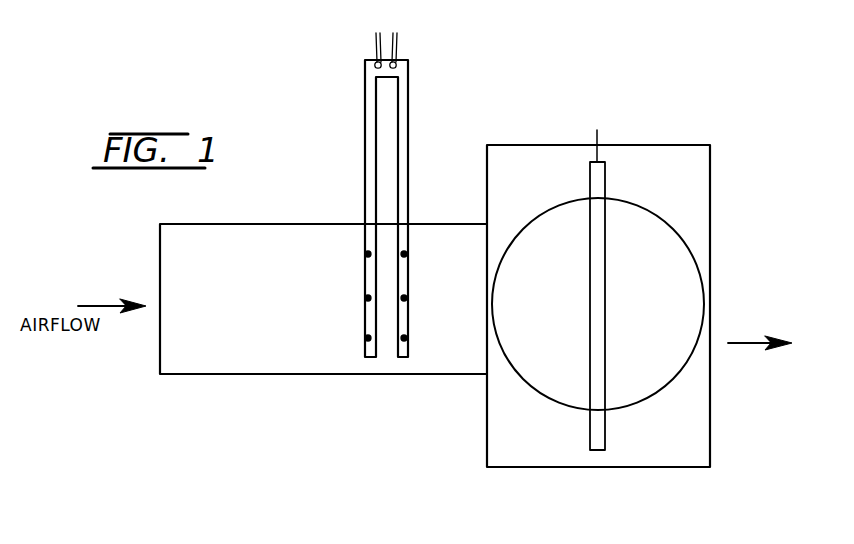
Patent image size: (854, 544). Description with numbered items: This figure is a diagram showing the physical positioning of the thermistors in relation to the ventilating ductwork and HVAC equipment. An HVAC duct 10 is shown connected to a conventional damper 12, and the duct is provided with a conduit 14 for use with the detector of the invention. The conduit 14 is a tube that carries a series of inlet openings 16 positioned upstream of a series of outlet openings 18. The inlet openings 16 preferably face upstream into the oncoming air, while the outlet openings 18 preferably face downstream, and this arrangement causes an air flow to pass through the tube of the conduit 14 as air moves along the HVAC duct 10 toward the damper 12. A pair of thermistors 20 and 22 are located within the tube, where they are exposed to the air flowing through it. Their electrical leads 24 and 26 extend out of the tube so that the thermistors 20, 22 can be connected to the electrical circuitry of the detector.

The HVAC duct 10 is at (231, 374).
The damper 12 is at (676, 256).
The conduit 14 is at (378, 346).
The inlet openings 16 is at (368, 254).
The outlet openings 18 is at (404, 338).
The thermistor 20 is at (368, 62).
The thermistor 22 is at (403, 62).
The electrical lead 24 is at (378, 48).
The electrical lead 26 is at (395, 48).